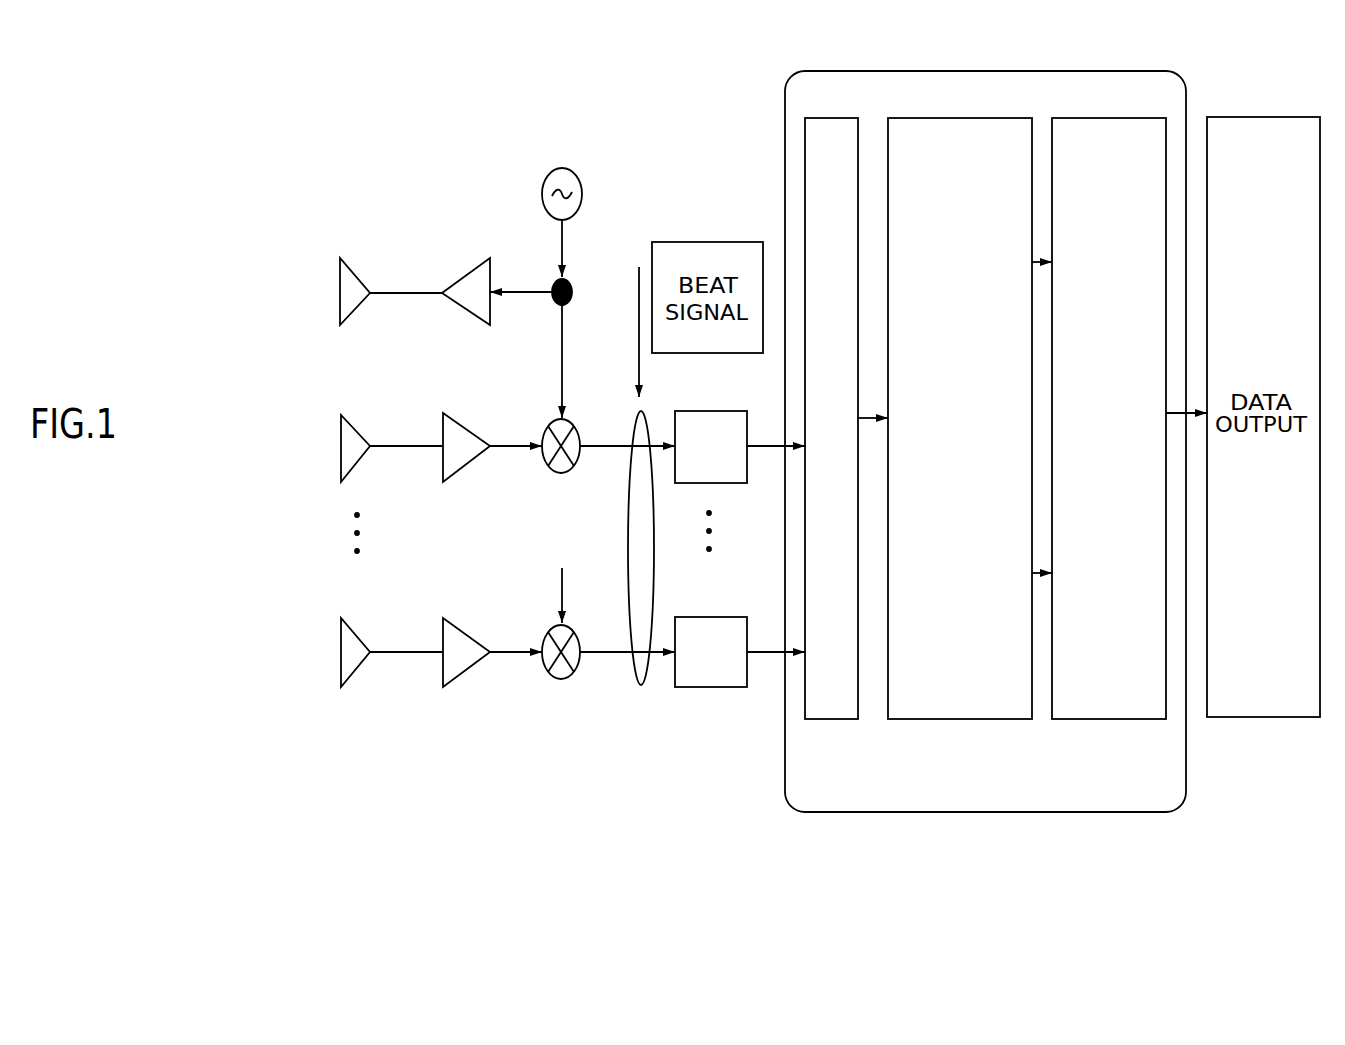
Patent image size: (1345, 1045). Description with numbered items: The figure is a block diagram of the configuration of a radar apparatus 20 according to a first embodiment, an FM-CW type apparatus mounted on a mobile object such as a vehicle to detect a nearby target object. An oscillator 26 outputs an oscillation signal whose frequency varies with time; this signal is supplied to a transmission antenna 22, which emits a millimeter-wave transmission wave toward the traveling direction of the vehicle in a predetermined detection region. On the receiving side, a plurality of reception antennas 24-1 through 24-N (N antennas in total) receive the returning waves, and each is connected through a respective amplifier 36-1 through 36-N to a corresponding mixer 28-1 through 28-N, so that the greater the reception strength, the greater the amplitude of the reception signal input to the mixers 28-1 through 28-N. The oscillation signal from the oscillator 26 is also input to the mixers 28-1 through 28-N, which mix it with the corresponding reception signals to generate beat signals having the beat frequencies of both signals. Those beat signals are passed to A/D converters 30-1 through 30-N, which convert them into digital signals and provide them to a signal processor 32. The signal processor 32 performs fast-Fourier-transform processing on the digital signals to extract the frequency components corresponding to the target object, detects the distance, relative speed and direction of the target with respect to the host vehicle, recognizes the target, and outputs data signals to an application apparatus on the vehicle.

The radar apparatus 20 is at (551, 97).
The transmission antenna 22 is at (347, 265).
The reception antenna 24-1 is at (345, 420).
The reception antenna 24-N is at (345, 623).
The oscillator 26 is at (582, 191).
The mixer 28-1 is at (580, 420).
The mixer 28-N is at (597, 604).
The A/D converter 30-1 is at (712, 411).
The A/D converter 30-N is at (718, 617).
The signal processor 32 is at (1093, 71).
The amplifier 36-1 is at (455, 473).
The amplifier 36-N is at (455, 678).